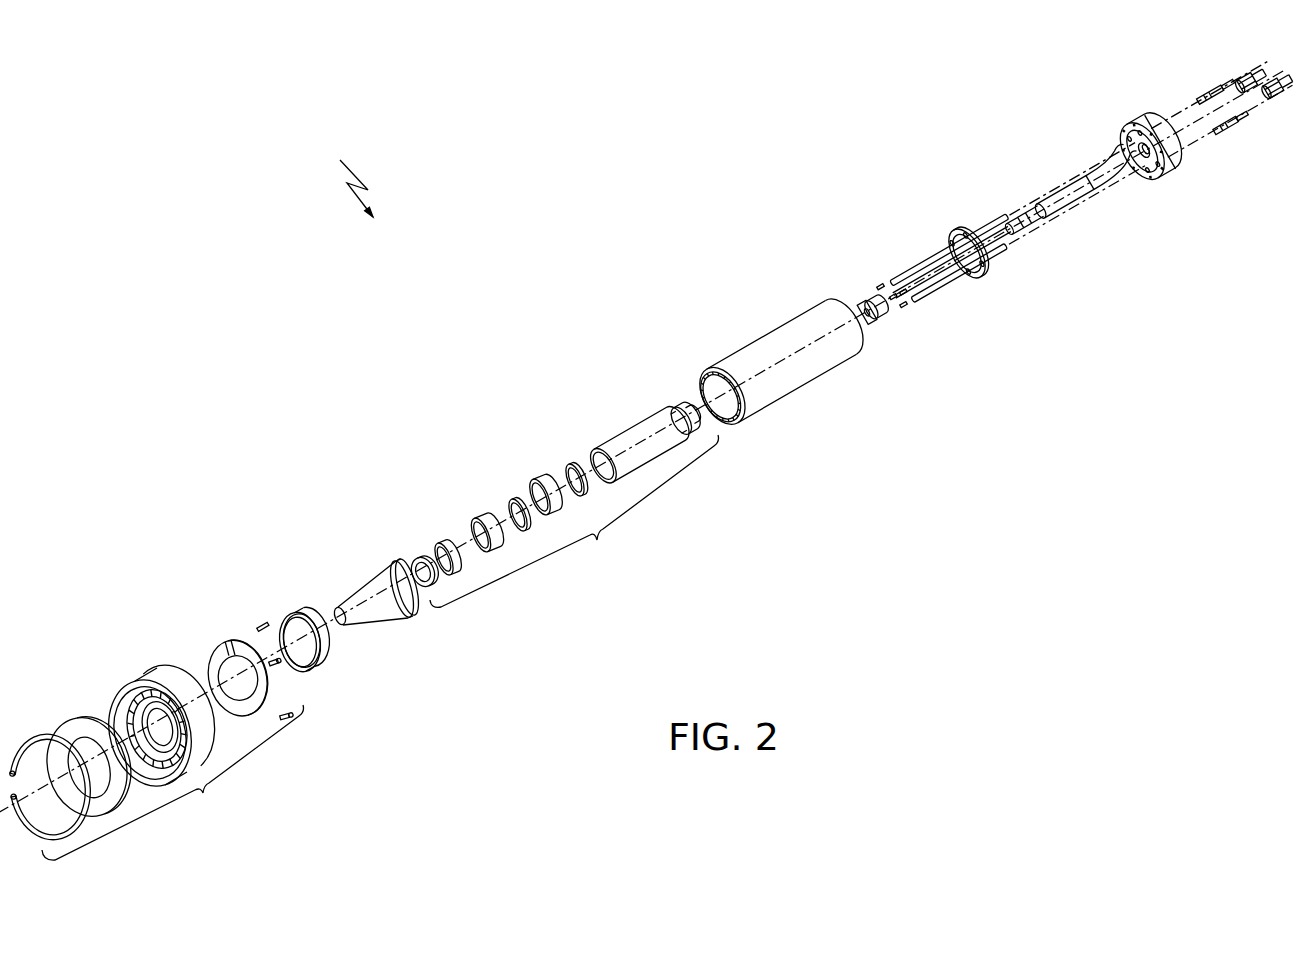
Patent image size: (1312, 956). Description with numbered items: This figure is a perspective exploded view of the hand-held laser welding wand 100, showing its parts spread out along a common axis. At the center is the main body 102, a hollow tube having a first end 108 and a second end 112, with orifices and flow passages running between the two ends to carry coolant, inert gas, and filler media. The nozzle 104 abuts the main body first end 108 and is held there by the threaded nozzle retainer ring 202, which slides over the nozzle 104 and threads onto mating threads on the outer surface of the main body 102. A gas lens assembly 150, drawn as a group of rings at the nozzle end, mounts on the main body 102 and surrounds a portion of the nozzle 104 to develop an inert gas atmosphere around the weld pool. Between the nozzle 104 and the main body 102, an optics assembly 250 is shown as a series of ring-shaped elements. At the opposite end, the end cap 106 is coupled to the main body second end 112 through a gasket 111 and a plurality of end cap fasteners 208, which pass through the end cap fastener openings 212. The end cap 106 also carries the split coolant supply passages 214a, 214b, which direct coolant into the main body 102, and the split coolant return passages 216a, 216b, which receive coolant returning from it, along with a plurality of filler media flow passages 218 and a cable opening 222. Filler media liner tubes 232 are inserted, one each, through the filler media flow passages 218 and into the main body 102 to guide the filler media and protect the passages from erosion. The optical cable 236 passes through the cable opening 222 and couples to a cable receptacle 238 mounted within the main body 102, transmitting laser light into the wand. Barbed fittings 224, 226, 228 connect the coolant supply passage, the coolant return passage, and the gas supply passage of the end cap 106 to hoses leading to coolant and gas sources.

The hand-held laser welding wand 100 is at (336, 177).
The main body 102 is at (783, 325).
The nozzle 104 is at (378, 624).
The end cap 106 is at (1138, 128).
The first end 108 is at (705, 373).
The gasket 111 is at (977, 280).
The second end 112 is at (860, 337).
The gas lens assembly 150 is at (153, 741).
The nozzle retainer ring 202 is at (322, 664).
The end cap fasteners 208 is at (1178, 147).
The end cap fastener openings 212 is at (1140, 130).
The coolant supply passage 214a is at (1153, 138).
The coolant supply passage 214b is at (1162, 177).
The coolant return passage 216a is at (1127, 140).
The coolant return passage 216b is at (1130, 168).
The filler media flow passages 218 is at (1128, 163).
The cable opening 222 is at (1142, 180).
The barbed fitting 224 is at (1250, 114).
The barbed fitting 226 is at (1240, 80).
The barbed fitting 228 is at (1250, 70).
The filler media liner tubes 232 is at (973, 225).
The optical cable 236 is at (1043, 197).
The cable receptacle 238 is at (860, 297).
The optics assembly 250 is at (562, 500).